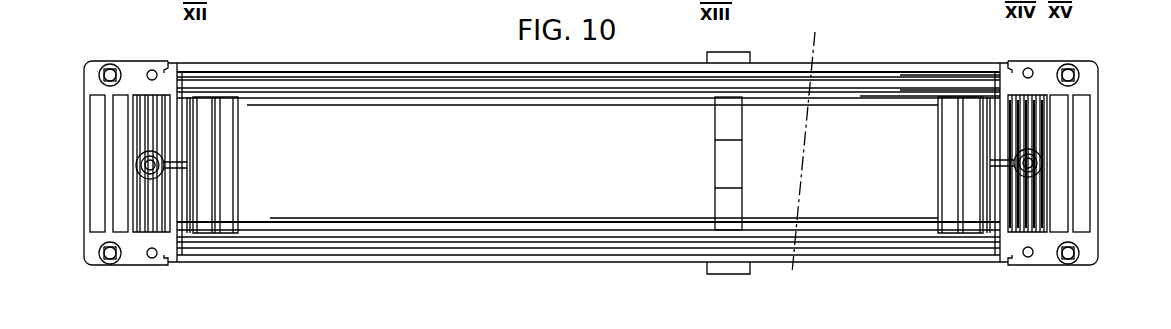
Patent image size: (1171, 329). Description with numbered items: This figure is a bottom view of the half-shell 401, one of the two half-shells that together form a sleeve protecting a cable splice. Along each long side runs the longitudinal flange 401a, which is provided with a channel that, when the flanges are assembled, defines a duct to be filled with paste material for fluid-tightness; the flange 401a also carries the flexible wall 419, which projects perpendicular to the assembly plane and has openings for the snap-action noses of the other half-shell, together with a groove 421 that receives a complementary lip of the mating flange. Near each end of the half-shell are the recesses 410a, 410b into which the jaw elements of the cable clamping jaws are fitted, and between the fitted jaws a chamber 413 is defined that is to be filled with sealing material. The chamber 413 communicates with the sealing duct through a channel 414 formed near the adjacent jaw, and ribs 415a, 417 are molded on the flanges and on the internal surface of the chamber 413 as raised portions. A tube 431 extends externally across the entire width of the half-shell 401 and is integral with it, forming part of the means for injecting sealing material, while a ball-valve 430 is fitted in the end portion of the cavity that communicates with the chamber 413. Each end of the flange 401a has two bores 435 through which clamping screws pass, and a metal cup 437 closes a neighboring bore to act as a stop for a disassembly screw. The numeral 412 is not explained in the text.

The half-shell 401 is at (364, 60).
The longitudinal flange 401a is at (848, 63).
The flexible wall 419 is at (650, 70).
The inner wall 412 is at (862, 97).
The ribs 415a is at (915, 82).
The groove 421 is at (945, 72).
The tube 431 is at (730, 153).
The channel 414 is at (182, 175).
The recess 410a is at (203, 125).
The recess 410b is at (118, 122).
The chamber 413 is at (1042, 125).
The ribs 417 is at (148, 206).
The ball-valve 430 is at (134, 166).
The bores 435 is at (151, 69).
The metal cup 437 is at (1098, 70).